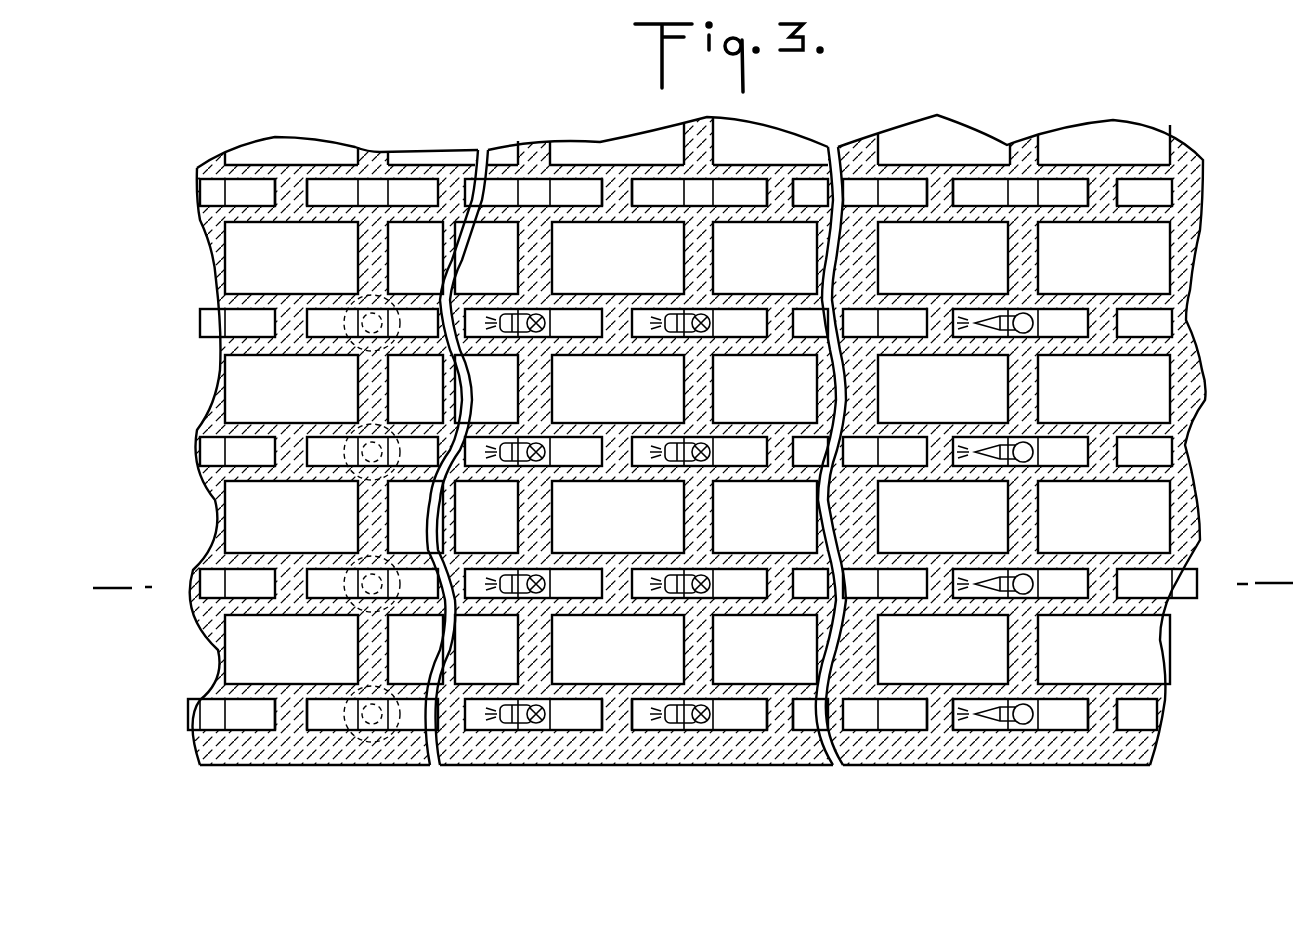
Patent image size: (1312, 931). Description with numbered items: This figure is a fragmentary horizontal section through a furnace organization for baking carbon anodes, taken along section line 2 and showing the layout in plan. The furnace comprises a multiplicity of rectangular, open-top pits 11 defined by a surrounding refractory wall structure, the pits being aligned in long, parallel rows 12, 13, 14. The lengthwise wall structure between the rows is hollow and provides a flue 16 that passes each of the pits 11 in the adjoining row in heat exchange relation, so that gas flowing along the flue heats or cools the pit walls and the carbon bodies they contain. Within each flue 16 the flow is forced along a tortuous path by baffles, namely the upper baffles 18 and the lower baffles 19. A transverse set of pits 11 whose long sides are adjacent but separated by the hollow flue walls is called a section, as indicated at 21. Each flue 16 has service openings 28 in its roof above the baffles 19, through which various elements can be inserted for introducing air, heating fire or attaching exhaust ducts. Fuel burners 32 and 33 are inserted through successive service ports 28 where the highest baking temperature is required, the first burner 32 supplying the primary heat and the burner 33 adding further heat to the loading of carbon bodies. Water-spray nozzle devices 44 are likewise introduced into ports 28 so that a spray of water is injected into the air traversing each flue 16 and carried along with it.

The section line 2— 2 is at (107, 593).
The pit 11 is at (584, 240).
The row of pits 12 is at (1227, 520).
The row of pits 13 is at (1227, 383).
The row of pits 14 is at (1222, 257).
The flue 16 is at (320, 440).
The upper baffle 18 is at (781, 341).
The lower baffle 19 is at (865, 321).
The section 21 is at (434, 143).
The service opening 28 is at (367, 317).
The fuel burner 32 is at (516, 317).
The fuel burner 33 is at (681, 317).
The water-spray nozzle device 44 is at (1006, 317).